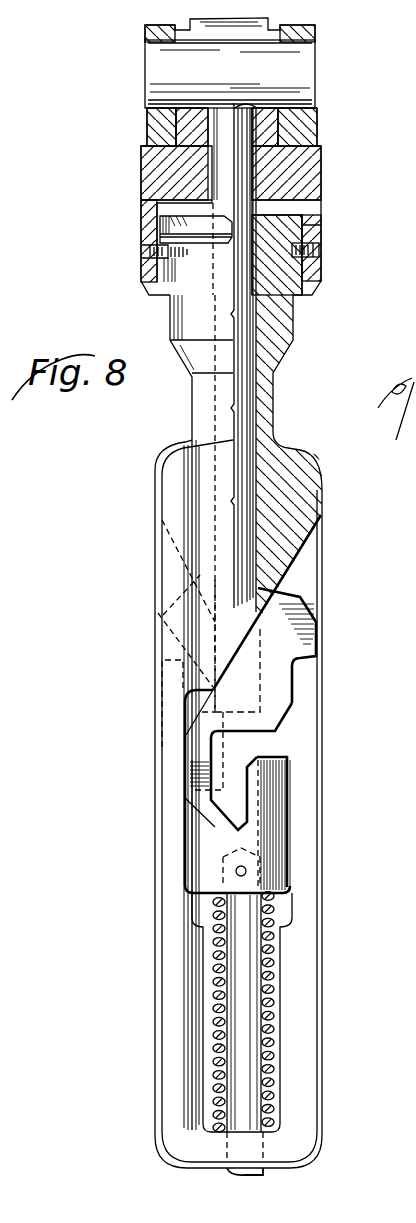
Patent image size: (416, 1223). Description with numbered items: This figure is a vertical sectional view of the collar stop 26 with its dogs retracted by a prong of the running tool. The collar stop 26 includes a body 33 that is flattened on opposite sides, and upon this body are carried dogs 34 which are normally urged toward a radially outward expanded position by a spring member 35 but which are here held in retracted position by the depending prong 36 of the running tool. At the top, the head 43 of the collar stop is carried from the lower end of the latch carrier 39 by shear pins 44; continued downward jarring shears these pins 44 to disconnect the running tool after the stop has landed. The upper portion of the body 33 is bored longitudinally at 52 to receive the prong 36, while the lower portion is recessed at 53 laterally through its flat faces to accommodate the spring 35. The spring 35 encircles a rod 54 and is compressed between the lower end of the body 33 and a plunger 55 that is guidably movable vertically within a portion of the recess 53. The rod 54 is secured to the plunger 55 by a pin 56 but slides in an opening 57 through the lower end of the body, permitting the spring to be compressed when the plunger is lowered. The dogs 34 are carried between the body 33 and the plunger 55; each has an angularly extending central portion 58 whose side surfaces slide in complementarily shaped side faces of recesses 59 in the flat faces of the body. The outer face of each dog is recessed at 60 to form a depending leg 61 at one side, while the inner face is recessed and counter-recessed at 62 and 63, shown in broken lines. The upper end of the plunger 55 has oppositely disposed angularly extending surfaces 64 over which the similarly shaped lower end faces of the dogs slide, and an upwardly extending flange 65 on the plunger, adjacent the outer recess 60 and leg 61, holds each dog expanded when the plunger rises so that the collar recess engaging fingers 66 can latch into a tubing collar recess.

The collar stop 26 is at (155, 567).
The body 33 is at (185, 500).
The dogs 34 is at (312, 606).
The spring member 35 is at (270, 946).
The prong 36 is at (244, 416).
The latch carrier 39 is at (310, 168).
The head 43 is at (300, 272).
The shear pins 44 is at (319, 241).
The bore 52 is at (255, 390).
The recess 53 is at (282, 1035).
The rod 54 is at (237, 992).
The plunger 55 is at (277, 841).
The pin 56 is at (247, 871).
The opening 57 is at (268, 1148).
The angularly extending central portion 58 is at (258, 758).
The recesses 59 is at (312, 553).
The outer dog recess 60 is at (280, 787).
The depending leg 61 is at (210, 786).
The inner face recess 62 is at (260, 693).
The counter-recess 63 is at (208, 759).
The angularly extending surfaces 64 is at (263, 818).
The upwardly extending flange 65 is at (276, 800).
The collar recess engaging fingers 66 is at (314, 636).